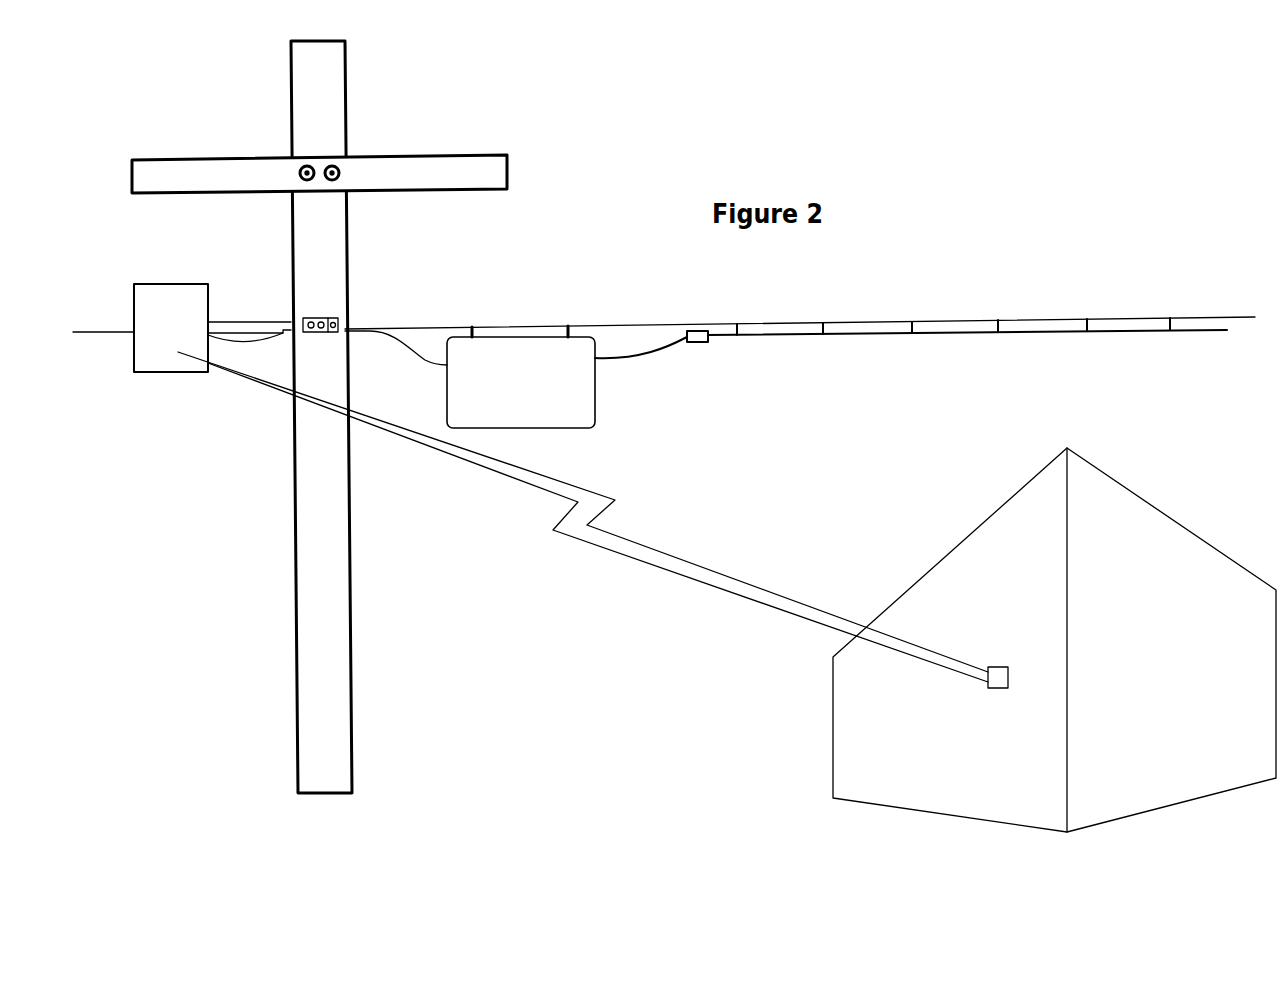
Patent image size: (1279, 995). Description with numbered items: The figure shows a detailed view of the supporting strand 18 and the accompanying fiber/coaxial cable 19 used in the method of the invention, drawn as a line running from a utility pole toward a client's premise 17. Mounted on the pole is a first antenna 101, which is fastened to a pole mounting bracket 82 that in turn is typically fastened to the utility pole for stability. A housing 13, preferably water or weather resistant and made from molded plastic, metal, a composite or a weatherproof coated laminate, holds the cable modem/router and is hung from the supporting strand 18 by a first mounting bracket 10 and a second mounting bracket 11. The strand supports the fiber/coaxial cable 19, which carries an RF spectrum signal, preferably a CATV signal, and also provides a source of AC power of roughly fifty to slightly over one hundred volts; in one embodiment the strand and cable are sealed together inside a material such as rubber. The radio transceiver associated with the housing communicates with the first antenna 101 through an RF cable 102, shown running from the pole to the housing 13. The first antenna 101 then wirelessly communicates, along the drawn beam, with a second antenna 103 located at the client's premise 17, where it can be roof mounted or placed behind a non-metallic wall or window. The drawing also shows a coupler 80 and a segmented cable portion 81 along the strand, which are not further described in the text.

The first mounting bracket 10 is at (478, 327).
The second mounting bracket 11 is at (568, 326).
The housing 13 is at (580, 428).
The client's premise 17 is at (1198, 533).
The supporting strand 18 is at (92, 332).
The fiber/coaxial cable 19 is at (625, 362).
The coupler 80 is at (698, 342).
The segmented power line cable 81 is at (800, 338).
The pole mounting bracket 82 is at (267, 322).
The first antenna 101 is at (165, 372).
The RF cable 102 is at (410, 365).
The second antenna 103 is at (988, 685).